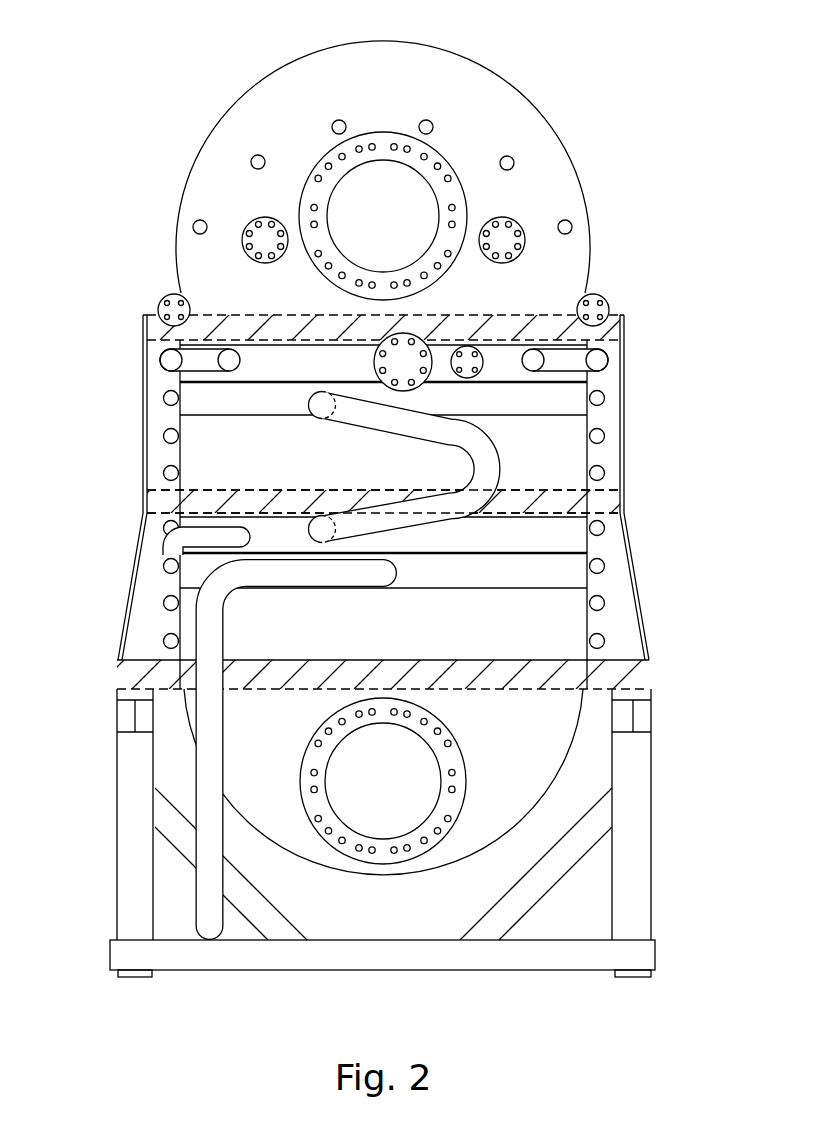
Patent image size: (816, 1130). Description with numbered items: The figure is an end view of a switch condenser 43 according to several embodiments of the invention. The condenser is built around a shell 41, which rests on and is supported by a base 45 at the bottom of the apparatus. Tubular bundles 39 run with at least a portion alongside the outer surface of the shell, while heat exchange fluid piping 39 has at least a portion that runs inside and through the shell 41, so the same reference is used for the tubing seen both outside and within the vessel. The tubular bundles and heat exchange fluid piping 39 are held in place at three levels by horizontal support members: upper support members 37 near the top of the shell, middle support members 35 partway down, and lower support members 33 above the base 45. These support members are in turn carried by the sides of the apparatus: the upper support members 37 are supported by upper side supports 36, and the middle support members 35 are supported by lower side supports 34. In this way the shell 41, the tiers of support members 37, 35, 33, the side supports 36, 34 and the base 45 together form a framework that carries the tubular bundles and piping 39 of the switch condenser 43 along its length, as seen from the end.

The switch condenser 43 is at (525, 72).
The shell 41 is at (480, 152).
The upper support members 37 is at (607, 332).
The upper side supports 36 is at (607, 420).
The tubular bundles and heat exchange fluid piping 39 is at (487, 456).
The middle support members 35 is at (608, 503).
The lower side supports 34 is at (617, 597).
The lower support members 33 is at (633, 675).
The base 45 is at (651, 770).